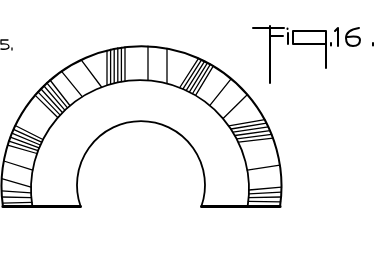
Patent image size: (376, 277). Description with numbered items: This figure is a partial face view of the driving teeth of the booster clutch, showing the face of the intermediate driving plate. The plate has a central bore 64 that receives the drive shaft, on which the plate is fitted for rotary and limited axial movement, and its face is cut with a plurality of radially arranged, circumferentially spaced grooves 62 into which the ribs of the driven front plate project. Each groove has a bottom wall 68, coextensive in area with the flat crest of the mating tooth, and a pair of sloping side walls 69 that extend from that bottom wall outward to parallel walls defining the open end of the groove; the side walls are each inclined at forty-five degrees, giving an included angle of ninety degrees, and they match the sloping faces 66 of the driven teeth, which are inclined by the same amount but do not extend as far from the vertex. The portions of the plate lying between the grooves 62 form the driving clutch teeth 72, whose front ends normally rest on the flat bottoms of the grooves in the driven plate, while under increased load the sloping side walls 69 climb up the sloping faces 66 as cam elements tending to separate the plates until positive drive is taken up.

The grooves 62 is at (141, 53).
The bore 64 is at (79, 190).
The sloping faces 66 is at (215, 213).
The bottom wall 68 is at (132, 51).
The sloping side walls 69 is at (122, 83).
The driving clutch teeth 72 is at (96, 59).